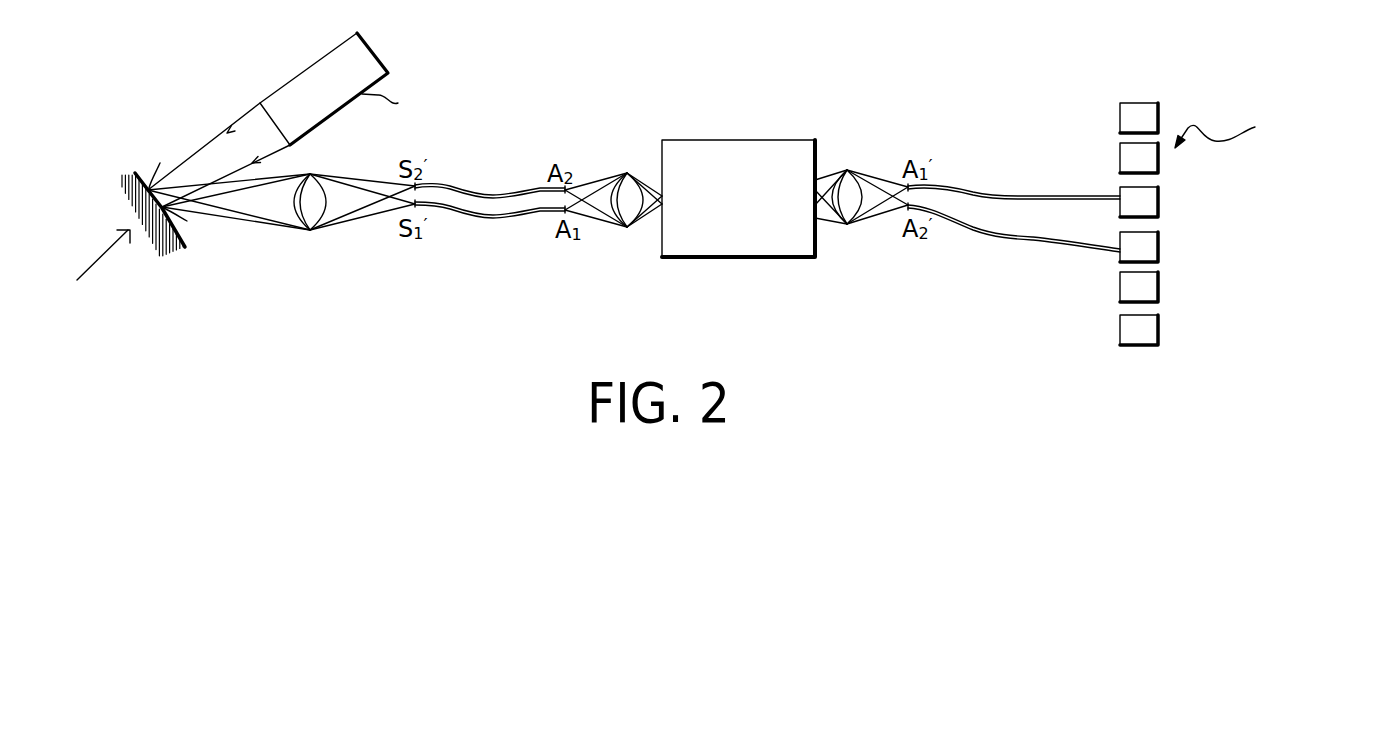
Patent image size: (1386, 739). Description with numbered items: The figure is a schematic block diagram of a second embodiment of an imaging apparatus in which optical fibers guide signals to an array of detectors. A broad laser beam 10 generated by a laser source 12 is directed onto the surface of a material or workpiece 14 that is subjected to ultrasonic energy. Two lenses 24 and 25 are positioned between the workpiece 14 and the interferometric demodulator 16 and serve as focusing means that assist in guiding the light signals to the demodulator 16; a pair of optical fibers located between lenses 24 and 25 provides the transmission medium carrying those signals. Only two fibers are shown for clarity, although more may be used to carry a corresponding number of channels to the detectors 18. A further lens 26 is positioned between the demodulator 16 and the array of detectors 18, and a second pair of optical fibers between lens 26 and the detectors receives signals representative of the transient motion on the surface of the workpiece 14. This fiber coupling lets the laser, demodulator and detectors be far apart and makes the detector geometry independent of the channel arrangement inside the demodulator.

The laser beam 10 is at (238, 120).
The laser source 12 is at (278, 90).
The workpiece 14 is at (122, 182).
The demodulator 16 is at (702, 140).
The detectors 18 is at (1143, 103).
The lens 24 is at (313, 233).
The lens 25 is at (628, 229).
The lens 26 is at (853, 224).